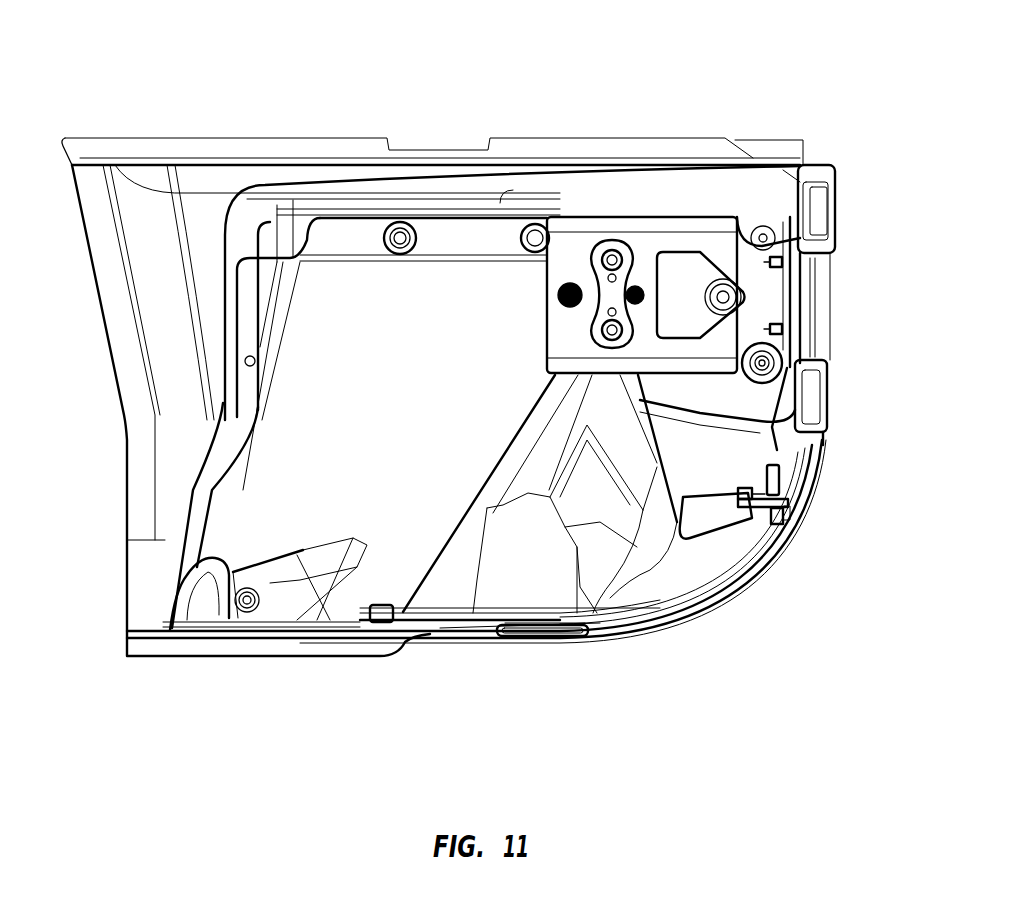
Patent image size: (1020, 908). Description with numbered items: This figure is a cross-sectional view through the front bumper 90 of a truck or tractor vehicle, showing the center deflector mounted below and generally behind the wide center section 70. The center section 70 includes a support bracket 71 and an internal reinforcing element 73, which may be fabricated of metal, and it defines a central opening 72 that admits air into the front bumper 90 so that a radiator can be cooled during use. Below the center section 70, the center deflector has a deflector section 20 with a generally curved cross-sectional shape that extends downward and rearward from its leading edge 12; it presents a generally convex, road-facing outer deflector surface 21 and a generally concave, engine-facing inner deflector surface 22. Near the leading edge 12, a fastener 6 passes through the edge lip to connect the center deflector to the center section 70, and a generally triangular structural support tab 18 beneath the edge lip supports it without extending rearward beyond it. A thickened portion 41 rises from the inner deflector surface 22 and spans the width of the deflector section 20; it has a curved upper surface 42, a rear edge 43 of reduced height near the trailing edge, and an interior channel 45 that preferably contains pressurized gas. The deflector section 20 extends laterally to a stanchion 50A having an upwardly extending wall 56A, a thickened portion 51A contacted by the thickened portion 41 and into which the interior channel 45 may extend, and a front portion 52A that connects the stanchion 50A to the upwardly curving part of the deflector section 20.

The front bumper 90 is at (513, 85).
The center section 70 is at (843, 183).
The support bracket 71 is at (642, 243).
The central opening 72 is at (820, 297).
The internal reinforcing element 73 is at (822, 215).
The left stanchion 50A is at (517, 412).
The thickened portion of the stanchion 51A is at (503, 583).
The front portion 52A is at (685, 563).
The upwardly extending wall 56A is at (605, 532).
The thickened portion 41 is at (482, 665).
The curved upper surface 42 is at (573, 626).
The rear edge 43 is at (490, 626).
The interior channel 45 is at (565, 630).
The fastener 6 is at (745, 492).
The leading edge 12 is at (782, 508).
The structural support tab 18 is at (785, 522).
The deflector section 20 is at (725, 606).
The outer deflector surface 21 is at (745, 592).
The inner deflector surface 22 is at (760, 555).